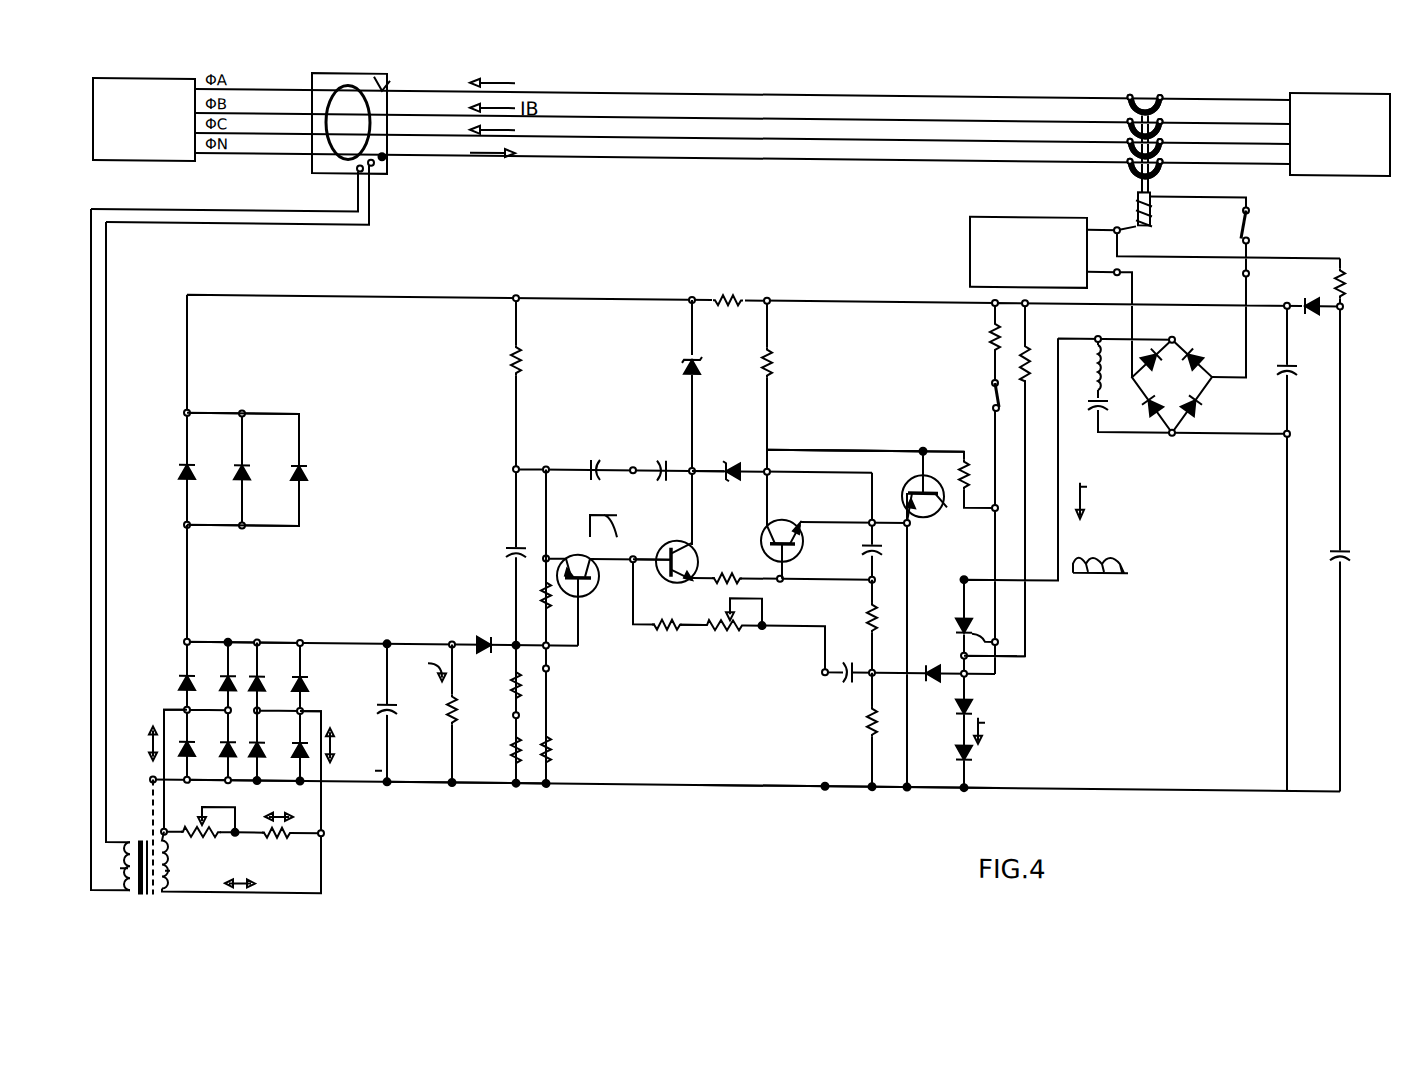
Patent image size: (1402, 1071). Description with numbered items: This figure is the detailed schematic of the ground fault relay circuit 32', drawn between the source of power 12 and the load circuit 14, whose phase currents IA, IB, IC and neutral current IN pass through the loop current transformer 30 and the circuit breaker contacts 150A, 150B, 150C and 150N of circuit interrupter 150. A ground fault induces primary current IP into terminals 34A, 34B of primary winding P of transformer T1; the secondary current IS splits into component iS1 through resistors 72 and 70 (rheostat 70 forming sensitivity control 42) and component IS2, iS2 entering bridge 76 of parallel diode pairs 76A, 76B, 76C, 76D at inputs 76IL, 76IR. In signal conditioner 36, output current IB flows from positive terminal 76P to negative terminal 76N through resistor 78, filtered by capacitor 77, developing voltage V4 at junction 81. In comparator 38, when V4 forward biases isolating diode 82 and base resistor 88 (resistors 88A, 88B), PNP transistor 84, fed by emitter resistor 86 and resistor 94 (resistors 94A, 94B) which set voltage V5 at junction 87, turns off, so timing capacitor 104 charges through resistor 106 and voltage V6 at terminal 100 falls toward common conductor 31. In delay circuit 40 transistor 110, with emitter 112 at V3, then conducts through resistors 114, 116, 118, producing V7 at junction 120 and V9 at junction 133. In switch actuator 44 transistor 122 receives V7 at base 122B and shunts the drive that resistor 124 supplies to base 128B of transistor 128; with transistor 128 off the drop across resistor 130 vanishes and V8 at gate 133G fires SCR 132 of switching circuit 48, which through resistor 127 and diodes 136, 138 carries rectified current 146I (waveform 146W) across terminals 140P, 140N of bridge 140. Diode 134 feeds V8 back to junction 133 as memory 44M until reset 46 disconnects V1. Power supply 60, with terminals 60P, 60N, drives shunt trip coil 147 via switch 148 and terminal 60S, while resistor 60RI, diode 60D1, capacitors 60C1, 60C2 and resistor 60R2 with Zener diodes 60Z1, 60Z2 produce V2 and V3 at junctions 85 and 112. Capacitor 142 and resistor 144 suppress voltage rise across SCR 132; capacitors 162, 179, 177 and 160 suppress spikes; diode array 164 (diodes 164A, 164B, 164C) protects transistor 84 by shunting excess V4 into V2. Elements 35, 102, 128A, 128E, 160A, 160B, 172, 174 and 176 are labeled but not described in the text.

The source of power 12 is at (1318, 171).
The load circuit 14 is at (128, 168).
The current monitor 30 is at (312, 172).
The primary alternating current IP is at (386, 92).
The phase A current IA is at (504, 83).
The output current IB is at (425, 670).
The phase C current IC is at (504, 130).
The neutral current IN is at (505, 153).
The primary winding terminal 34A is at (184, 212).
The primary winding terminal 34B is at (186, 228).
The common conductor 31 is at (932, 788).
The electrical circuit 32' is at (800, 802).
The input circuit 35 is at (360, 556).
The sensor signal conditioner 36 is at (300, 624).
The voltage comparator 38 is at (488, 816).
The variable time delay circuit 40 is at (733, 423).
The variable time delay control 42 is at (708, 703).
The switch actuator 44 is at (882, 416).
The memory means 44M is at (955, 653).
The reset means 46 is at (988, 390).
The switching circuit 48 is at (1083, 607).
The ground fault sensor power supply 60 is at (994, 210).
The first terminal 60P is at (1124, 222).
The second terminal 60N is at (1121, 268).
The terminal 60S is at (1243, 270).
The diode 60D1 is at (1310, 296).
The resistor 60RI is at (1345, 278).
The resistor 60R2 is at (720, 298).
The storage capacitor 60C1 is at (1350, 549).
The second capacitor 60C2 is at (1282, 370).
The Zener diode 60Z1 is at (686, 364).
The Zener diode 60Z2 is at (744, 464).
The adjustable resistor 70 is at (200, 842).
The resistor 72 is at (278, 842).
The bridge circuit 76 is at (266, 624).
The parallel diode pair 76A is at (284, 676).
The parallel diode pair 76B is at (212, 762).
The parallel diode pair 76C is at (212, 676).
The parallel diode pair 76D is at (284, 762).
The input terminal 76IL is at (178, 714).
The input terminal 76IR is at (302, 714).
The positive output terminal 76P is at (385, 646).
The negative output terminal 76N is at (384, 788).
The filter capacitor 77 is at (396, 716).
The resistor 78 is at (448, 710).
The point of junction 81 is at (449, 642).
The isolating diode 82 is at (484, 640).
The transistor 84 is at (586, 592).
The junction 85 is at (696, 304).
The emitter resistor 86 is at (521, 362).
The junction 87 is at (546, 468).
The base drive resistor 88 is at (490, 746).
The resistor 88A is at (511, 692).
The resistor 88B is at (511, 756).
The resistive means 94 is at (608, 669).
The resistor 94A is at (541, 598).
The resistor 94B is at (550, 754).
The output terminal 100 is at (634, 556).
The filter characteristic 102 is at (585, 526).
The multi-purpose timing capacitor 104 is at (600, 481).
The resistive element 106 is at (712, 669).
The second transistor 110 is at (674, 584).
The emitter junction 112 is at (694, 478).
The resistor 114 is at (732, 574).
The resistor 116 is at (867, 622).
The resistor 118 is at (867, 729).
The junction point 120 is at (874, 578).
The third transistor 122 is at (782, 514).
The base 122B is at (785, 570).
The resistor 124 is at (772, 364).
The resistor 127 is at (960, 476).
The transistor 128 is at (912, 500).
The conductor 128A is at (990, 460).
The base 128B is at (902, 472).
The transistor emitter 128E is at (910, 520).
The resistor 130 is at (990, 336).
The silicon controlled rectifier 132 is at (956, 618).
The junction point 133 is at (872, 667).
The gate terminal 133G is at (997, 648).
The diode 134 is at (942, 680).
The diode 136 is at (970, 706).
The diode 138 is at (970, 752).
The input power supply bridge circuit 140 is at (1187, 381).
The positive terminal 140P is at (1178, 323).
The negative terminal 140N is at (1172, 432).
The capacitor 142 is at (1090, 406).
The resistor 144 is at (1092, 372).
The current 146I is at (1052, 612).
The wave shape 146W is at (1128, 556).
The circuit breaker shunt trip coil 147 is at (1152, 212).
The control switch 148 is at (1250, 215).
The circuit breaker 150 is at (1110, 184).
The circuit breaker contact 150A is at (1128, 95).
The circuit breaker contact 150B is at (1128, 118).
The circuit breaker contact 150C is at (1128, 138).
The circuit breaker contact 150N is at (1128, 158).
The capacitive element 160 is at (846, 666).
The resistor 160A is at (678, 630).
The potentiometer 160B is at (732, 632).
The capacitive element 162 is at (508, 556).
The parallel diode array 164 is at (258, 410).
The diode 164A is at (184, 476).
The diode 164B is at (240, 476).
The diode 164C is at (296, 476).
The node 172 is at (512, 717).
The node 174 is at (549, 672).
The resistor 176 is at (1041, 341).
The capacitive element 177 is at (862, 548).
The capacitive element 179 is at (662, 462).
The transformer T1 is at (159, 912).
The secondary current IS is at (232, 886).
The current component iS1 is at (274, 816).
The current component IS2 is at (150, 746).
The current component iS2 is at (345, 745).
The voltage source V1 is at (1285, 302).
The voltage V2 is at (690, 298).
The voltage V3 is at (688, 476).
The voltage V4 is at (456, 652).
The voltage V5 is at (530, 482).
The voltage V6 is at (632, 558).
The voltage V7 is at (870, 582).
The gate voltage V8 is at (1007, 632).
The voltage V9 is at (874, 676).